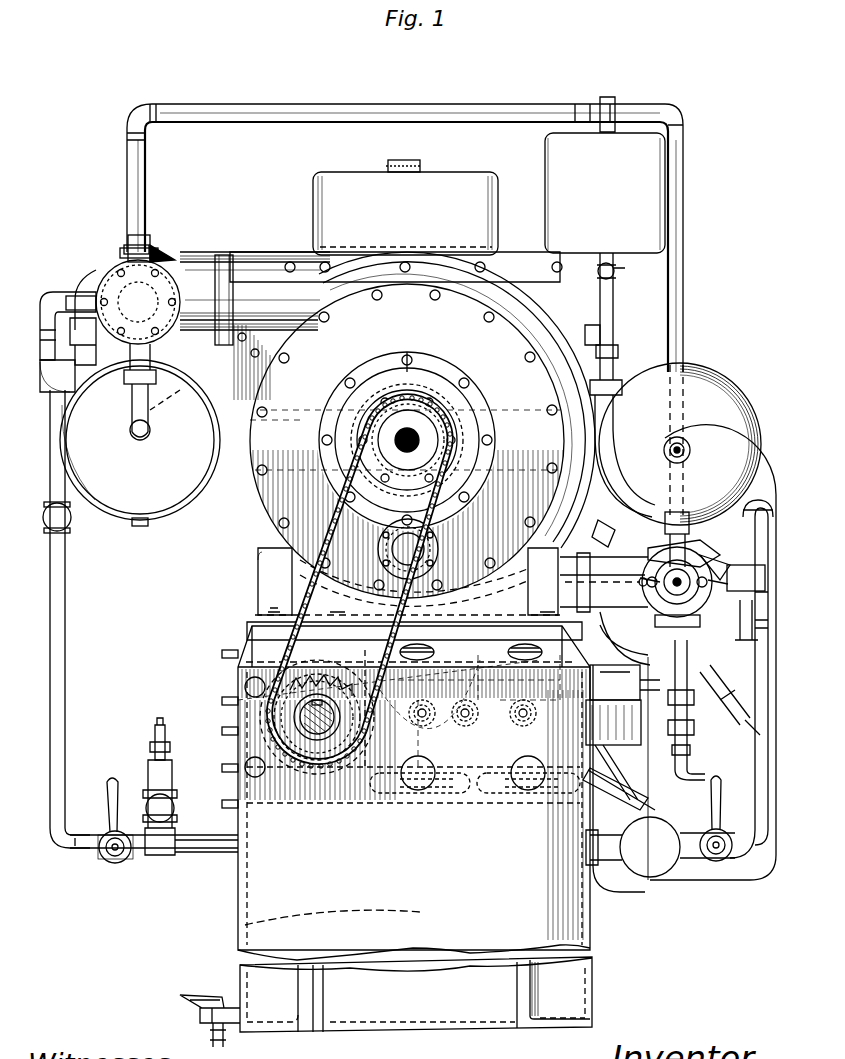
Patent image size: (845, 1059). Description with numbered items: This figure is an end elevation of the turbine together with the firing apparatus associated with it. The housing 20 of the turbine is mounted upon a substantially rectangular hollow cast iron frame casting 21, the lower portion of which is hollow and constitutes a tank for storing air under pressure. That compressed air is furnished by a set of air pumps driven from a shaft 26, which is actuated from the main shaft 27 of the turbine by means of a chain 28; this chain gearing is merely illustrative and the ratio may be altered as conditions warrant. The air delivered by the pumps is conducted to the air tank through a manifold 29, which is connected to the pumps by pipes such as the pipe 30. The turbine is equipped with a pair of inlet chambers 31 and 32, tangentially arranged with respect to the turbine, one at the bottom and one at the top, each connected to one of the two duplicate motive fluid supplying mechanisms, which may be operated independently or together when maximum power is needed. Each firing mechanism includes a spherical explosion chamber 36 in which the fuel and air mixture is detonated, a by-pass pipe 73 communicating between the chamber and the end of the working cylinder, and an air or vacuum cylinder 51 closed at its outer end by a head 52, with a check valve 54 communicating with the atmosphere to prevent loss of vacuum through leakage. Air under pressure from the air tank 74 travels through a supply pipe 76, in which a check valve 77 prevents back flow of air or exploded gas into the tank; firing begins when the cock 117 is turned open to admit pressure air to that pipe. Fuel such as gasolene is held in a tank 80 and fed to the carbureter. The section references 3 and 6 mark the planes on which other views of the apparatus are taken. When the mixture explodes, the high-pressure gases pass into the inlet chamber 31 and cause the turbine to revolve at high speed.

The pipe 3 is at (122, 198).
The section line 6 is at (262, 288).
The housing of the turbine 20 is at (262, 488).
The frame casting 21 is at (242, 890).
The shaft 26 is at (302, 710).
The main shaft of the turbine 27 is at (418, 446).
The chain 28 is at (300, 551).
The manifold 29 is at (656, 870).
The pipes 30 is at (638, 798).
The inlet chamber 31 is at (236, 262).
The inlet chamber 32 is at (525, 645).
The spherical explosion chamber 36 is at (160, 492).
The air or vacuum cylinder 51 is at (40, 300).
The head 52 is at (133, 296).
The check valve 54 is at (150, 258).
The by-pass pipe 73 is at (133, 409).
The air tank 74 is at (303, 912).
The supply pipe 76 is at (62, 620).
The check valve 77 is at (66, 512).
The tank 80 is at (457, 176).
The cock 117 is at (108, 862).